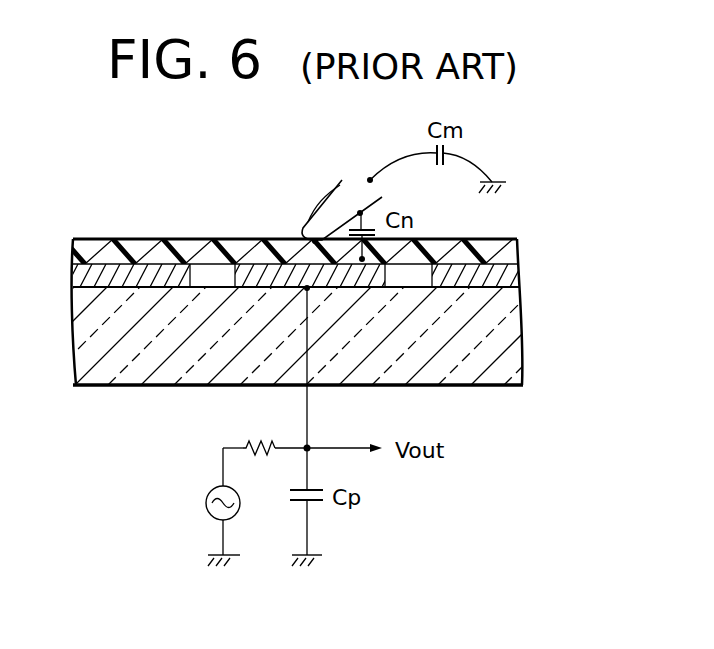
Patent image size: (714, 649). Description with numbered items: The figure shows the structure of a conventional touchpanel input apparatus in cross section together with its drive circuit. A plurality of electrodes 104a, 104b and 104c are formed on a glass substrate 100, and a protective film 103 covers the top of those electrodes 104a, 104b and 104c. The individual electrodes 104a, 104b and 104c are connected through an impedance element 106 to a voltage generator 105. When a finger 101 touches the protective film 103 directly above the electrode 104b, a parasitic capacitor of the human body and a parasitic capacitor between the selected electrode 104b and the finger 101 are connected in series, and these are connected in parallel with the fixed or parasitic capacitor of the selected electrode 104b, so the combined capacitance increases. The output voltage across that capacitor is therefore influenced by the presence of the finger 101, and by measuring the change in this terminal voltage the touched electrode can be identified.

The glass substrate 100 is at (520, 345).
The finger 101 is at (330, 192).
The protective film 103 is at (518, 250).
The electrode 104a is at (138, 287).
The electrode 104b is at (343, 288).
The electrode 104c is at (482, 289).
The voltage generator 105 is at (237, 516).
The impedance element 106 is at (250, 442).